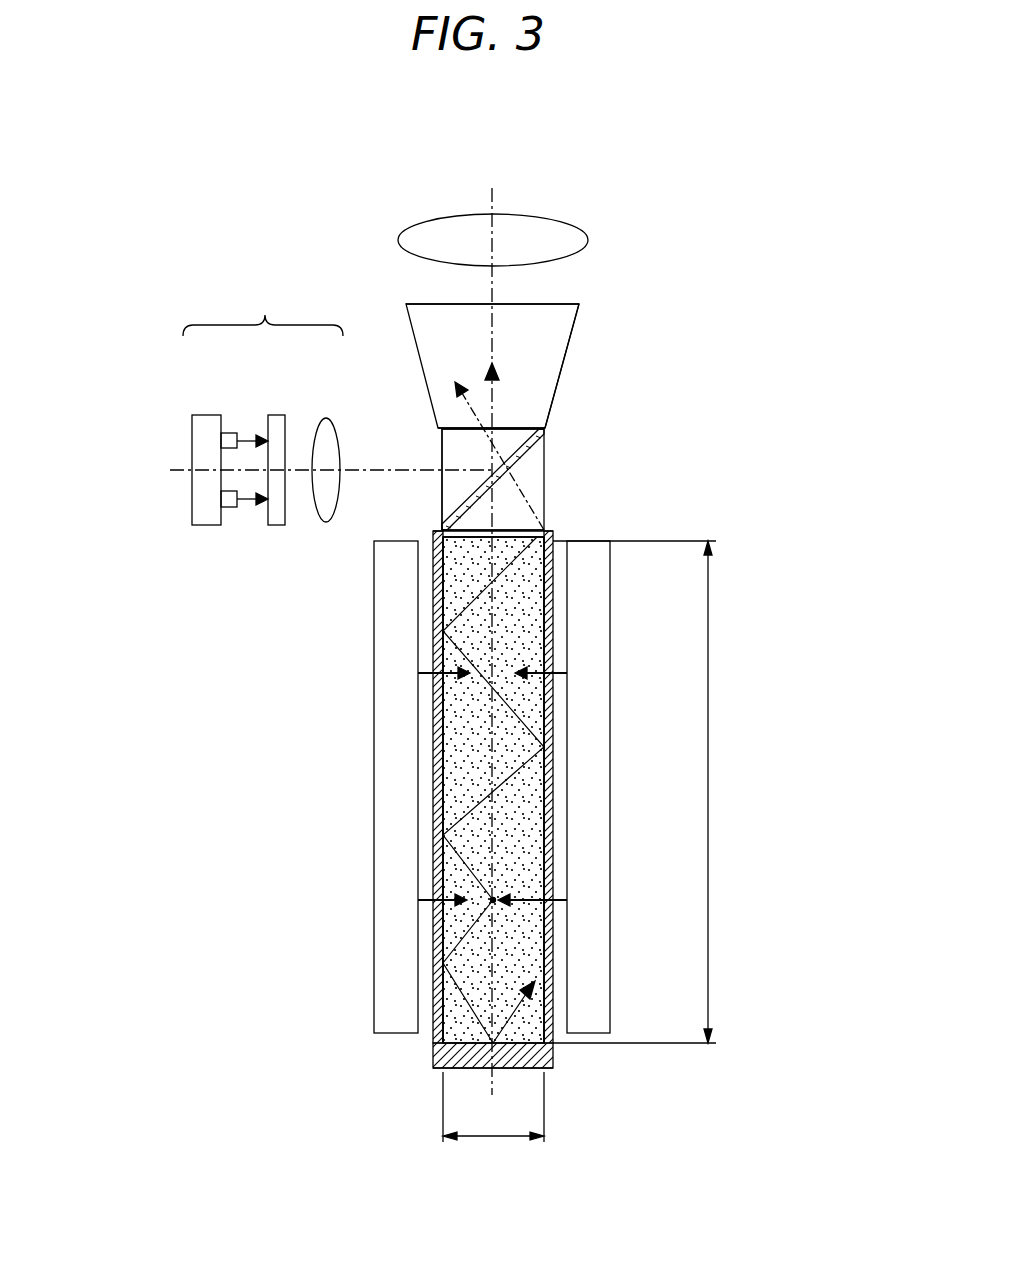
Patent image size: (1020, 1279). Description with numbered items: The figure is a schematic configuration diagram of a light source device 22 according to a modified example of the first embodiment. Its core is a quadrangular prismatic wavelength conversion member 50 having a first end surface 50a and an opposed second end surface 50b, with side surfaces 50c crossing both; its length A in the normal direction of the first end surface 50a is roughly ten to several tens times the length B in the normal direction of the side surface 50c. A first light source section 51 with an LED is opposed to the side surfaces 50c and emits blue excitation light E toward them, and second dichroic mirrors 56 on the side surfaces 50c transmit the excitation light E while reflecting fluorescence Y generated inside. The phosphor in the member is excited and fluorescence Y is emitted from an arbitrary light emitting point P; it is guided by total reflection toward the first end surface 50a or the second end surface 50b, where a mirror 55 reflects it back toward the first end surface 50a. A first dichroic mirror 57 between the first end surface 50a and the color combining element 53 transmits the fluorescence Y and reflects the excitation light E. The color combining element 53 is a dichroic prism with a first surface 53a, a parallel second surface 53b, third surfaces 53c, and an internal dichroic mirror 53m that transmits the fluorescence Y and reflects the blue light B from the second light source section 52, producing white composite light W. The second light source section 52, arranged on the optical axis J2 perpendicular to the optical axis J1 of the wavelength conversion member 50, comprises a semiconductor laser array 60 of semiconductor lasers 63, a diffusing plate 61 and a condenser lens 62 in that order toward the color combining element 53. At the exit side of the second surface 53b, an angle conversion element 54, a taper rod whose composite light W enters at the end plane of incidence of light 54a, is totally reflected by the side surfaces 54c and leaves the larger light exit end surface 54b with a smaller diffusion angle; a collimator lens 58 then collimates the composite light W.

The light source device 22 is at (456, 180).
The optical axis of the wavelength conversion member J1 is at (496, 200).
The optical axis of the second light source section J2 is at (352, 470).
The collimator lens 58 is at (423, 228).
The angle conversion element 54 is at (560, 312).
The end plane of incidence of light 54a is at (446, 430).
The light exit end surface 54b is at (425, 305).
The side surfaces 54c is at (568, 340).
The color combining element 53 is at (532, 492).
The first surface 53a is at (443, 540).
The second surface 53b is at (524, 428).
The third surfaces 53c is at (440, 502).
The dichroic mirror 53m is at (528, 450).
The wavelength conversion member 50 is at (525, 860).
The first end surface 50a is at (530, 534).
The second end surface 50b is at (520, 1047).
The side surfaces 50c is at (440, 745).
The first dichroic mirror 57 is at (480, 563).
The mirror 55 is at (470, 1065).
The second dichroic mirrors 56 is at (440, 993).
The first light source section 51 is at (385, 690).
The second light source section 52 is at (263, 308).
The semiconductor laser array 60 is at (210, 432).
The diffusing plate 61 is at (276, 420).
The condenser lens 62 is at (327, 418).
The semiconductor lasers 63 is at (227, 442).
The composite light W is at (500, 390).
The fluorescence Y is at (480, 797).
The excitation light E is at (553, 672).
The light emitting point P is at (495, 902).
The length of the wavelength conversion member in the normal direction of the first A is at (644, 792).
The length of the wavelength conversion member in the normal direction of the side s B is at (244, 510).